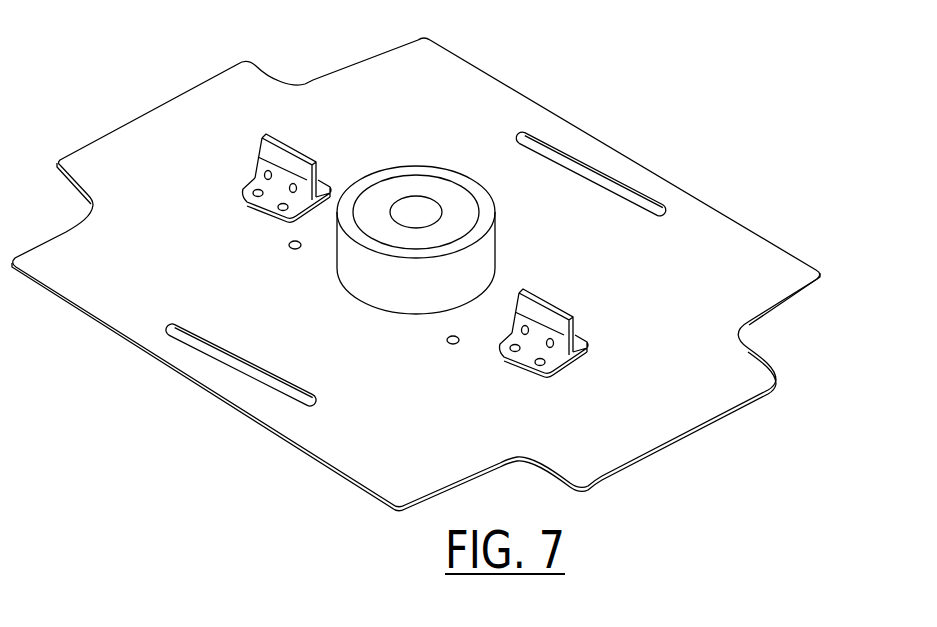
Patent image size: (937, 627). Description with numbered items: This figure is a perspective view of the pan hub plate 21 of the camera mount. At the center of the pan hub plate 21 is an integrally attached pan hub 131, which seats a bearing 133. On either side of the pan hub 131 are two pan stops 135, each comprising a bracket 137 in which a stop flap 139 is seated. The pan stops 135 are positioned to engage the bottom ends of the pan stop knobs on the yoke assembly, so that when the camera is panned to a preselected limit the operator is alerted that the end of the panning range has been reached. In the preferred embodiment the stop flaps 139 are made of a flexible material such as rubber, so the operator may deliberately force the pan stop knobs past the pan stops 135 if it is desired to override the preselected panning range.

The pan hub plate 21 is at (630, 384).
The pan hub 131 is at (368, 343).
The bearing 133 is at (373, 227).
The pan stops 135 is at (489, 203).
The brackets 137 is at (237, 135).
The stop flap 139 is at (285, 163).